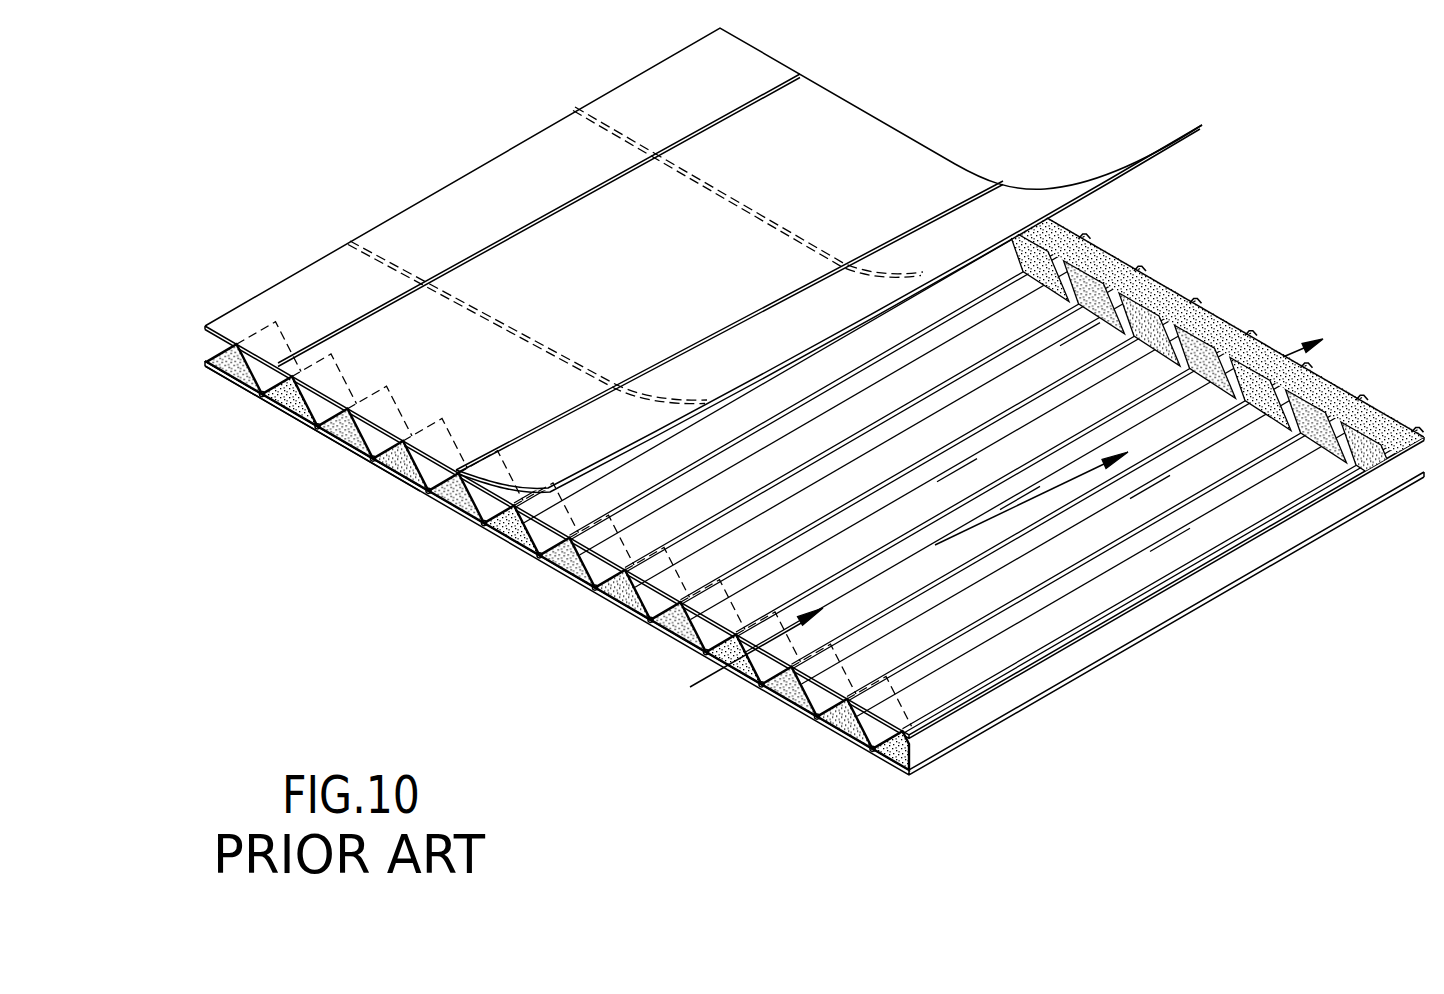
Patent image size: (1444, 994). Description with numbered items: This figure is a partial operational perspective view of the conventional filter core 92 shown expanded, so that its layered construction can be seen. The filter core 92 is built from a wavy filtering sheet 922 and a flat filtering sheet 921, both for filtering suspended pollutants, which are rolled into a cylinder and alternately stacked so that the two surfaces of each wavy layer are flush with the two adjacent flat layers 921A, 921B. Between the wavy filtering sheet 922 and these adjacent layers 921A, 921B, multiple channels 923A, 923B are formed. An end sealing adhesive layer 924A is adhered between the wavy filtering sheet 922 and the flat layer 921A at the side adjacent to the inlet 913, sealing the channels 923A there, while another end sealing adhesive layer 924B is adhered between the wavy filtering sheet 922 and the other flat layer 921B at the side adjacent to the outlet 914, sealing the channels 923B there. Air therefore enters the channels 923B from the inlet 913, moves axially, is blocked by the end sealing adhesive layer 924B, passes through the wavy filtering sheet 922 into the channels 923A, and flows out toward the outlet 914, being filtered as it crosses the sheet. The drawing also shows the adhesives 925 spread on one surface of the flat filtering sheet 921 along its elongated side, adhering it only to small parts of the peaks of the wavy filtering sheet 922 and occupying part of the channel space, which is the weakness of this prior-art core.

The filter core 92 is at (427, 162).
The flat filtering sheet 921 is at (1116, 641).
The flat filtering sheet layer 921A is at (228, 367).
The flat filtering sheet layer 921B is at (304, 290).
The wavy filtering sheet 922 is at (1182, 542).
The channels 923A is at (408, 484).
The channels 923B is at (377, 437).
The end sealing adhesive layer 924A is at (557, 556).
The end sealing adhesive layer 924B is at (1223, 333).
The adhesives 925 is at (575, 106).
The inlet 913 is at (448, 717).
The outlet 914 is at (1383, 144).